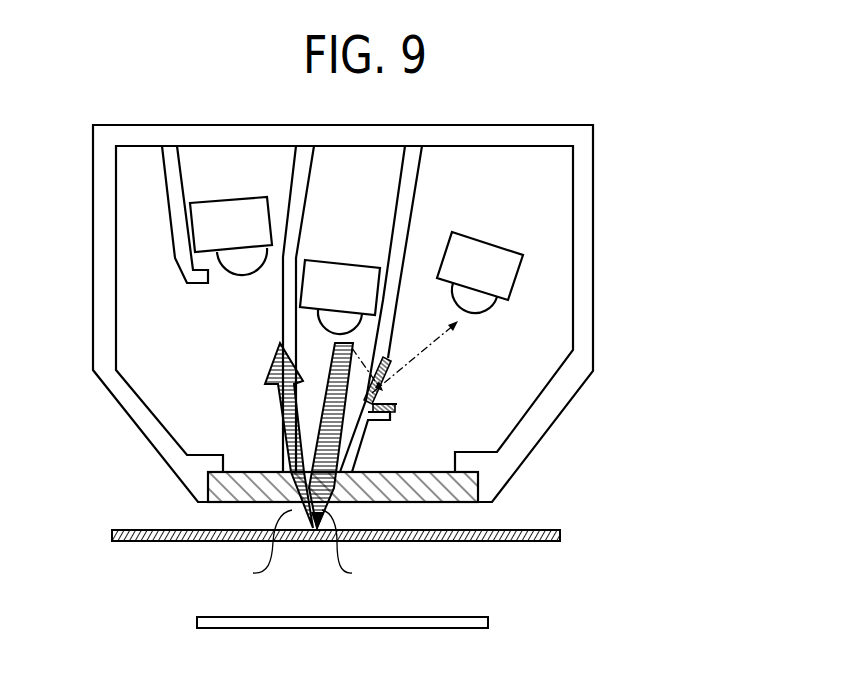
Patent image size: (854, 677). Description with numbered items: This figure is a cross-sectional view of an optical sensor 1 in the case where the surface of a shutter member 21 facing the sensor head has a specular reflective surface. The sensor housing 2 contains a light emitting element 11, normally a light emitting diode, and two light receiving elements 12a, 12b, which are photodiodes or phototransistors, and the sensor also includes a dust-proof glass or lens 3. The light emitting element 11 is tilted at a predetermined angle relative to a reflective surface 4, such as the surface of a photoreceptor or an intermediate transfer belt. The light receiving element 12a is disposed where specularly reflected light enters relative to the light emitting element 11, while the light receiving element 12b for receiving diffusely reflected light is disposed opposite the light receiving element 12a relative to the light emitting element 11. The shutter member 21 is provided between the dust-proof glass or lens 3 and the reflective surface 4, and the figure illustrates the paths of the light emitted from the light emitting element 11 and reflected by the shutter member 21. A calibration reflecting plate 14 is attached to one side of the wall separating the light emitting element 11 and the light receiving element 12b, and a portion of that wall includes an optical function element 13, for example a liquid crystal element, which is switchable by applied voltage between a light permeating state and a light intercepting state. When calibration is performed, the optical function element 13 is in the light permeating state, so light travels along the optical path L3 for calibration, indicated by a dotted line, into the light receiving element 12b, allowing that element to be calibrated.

The optical sensor 1 is at (361, 350).
The sensor housing 2 is at (138, 433).
The dust-proof glass or lens 3 is at (465, 503).
The reflective surface 4 is at (490, 617).
The light emitting element 11 is at (348, 270).
The light receiving element 12a is at (228, 205).
The light receiving element 12b is at (480, 247).
The optical function element 13 is at (376, 362).
The calibration reflecting plate 14 is at (397, 408).
The shutter member 21 is at (566, 535).
The optical path for calibration L3 is at (415, 370).